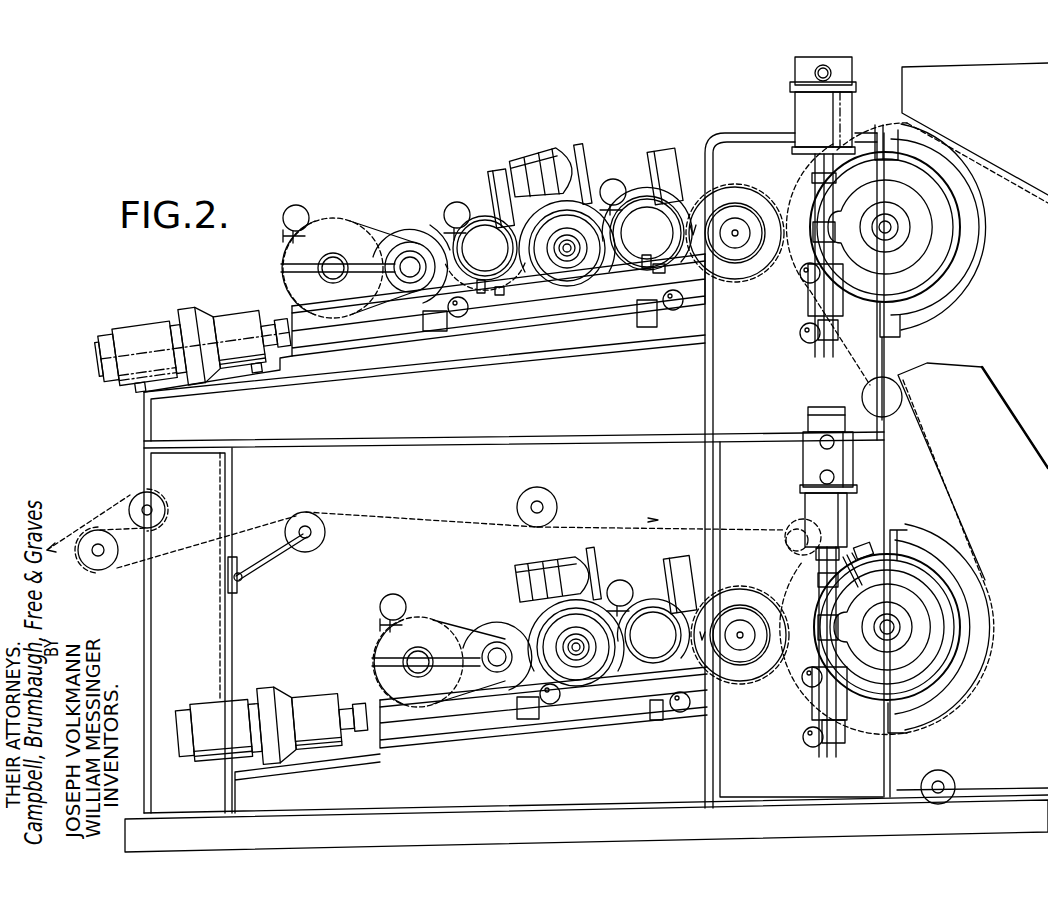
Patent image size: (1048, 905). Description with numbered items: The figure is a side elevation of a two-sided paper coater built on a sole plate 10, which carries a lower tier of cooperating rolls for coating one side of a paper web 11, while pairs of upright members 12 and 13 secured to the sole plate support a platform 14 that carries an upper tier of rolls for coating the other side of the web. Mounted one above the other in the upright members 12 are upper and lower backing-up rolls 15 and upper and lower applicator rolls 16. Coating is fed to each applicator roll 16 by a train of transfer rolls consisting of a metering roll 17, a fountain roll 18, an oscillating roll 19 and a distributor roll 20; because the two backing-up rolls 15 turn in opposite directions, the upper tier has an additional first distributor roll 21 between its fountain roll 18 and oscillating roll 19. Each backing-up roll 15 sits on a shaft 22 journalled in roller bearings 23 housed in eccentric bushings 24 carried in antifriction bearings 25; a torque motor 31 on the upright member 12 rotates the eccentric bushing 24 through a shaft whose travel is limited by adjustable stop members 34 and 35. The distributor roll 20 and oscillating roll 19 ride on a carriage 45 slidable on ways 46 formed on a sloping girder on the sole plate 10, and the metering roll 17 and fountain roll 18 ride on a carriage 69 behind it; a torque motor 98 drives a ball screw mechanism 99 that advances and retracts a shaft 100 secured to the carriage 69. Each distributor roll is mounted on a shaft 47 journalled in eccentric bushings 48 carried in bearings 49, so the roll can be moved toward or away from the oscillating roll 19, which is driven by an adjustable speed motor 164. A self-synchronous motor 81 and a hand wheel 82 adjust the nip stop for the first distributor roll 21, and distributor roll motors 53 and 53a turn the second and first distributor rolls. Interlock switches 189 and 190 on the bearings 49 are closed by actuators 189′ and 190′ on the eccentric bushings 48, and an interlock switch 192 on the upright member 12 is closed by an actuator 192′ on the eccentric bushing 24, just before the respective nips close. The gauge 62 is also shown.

The sole plate 10 is at (492, 813).
The paper web 11 is at (587, 523).
The upright member 12 is at (705, 473).
The upright member 13 is at (234, 487).
The platform 14 is at (493, 440).
The backing-up roll 15 is at (985, 248).
The applicator roll 16 is at (748, 283).
The metering roll 17 is at (331, 226).
The fountain roll 18 is at (404, 231).
The oscillating roll 19 is at (573, 167).
The distributor roll 20 is at (634, 170).
The distributor roll 21 is at (478, 208).
The shaft 22 is at (890, 612).
The roller bearing 23 is at (920, 627).
The eccentric bushing 24 is at (938, 655).
The antifriction bearing 25 is at (930, 687).
The torque motor 31 is at (803, 108).
The adjustable stop member 34 is at (800, 285).
The adjustable stop member 35 is at (800, 336).
The carriage 45 is at (573, 298).
The ways 46 is at (530, 325).
The shaft 47 is at (489, 232).
The eccentric bushing 48 is at (472, 215).
The bearing 49 is at (693, 228).
The second distributor roll motor 53 is at (678, 557).
The first distributor roll motor 53a is at (503, 172).
The gauge 62 is at (448, 205).
The carriage 69 is at (373, 328).
The self-synchronous motor 81 is at (440, 332).
The hand wheel 82 is at (461, 318).
The torque motor 98 is at (143, 322).
The ball screw mechanism 99 is at (240, 317).
The shaft 100 is at (284, 324).
The adjustable speed motor 164 is at (520, 567).
The interlock switch 189 is at (498, 296).
The adjustable actuator 189′ is at (482, 280).
The interlock switch 190 is at (655, 273).
The adjustable actuator 190′ is at (645, 262).
The interlock switch 192 is at (863, 543).
The adjustable actuator 192′ is at (848, 570).